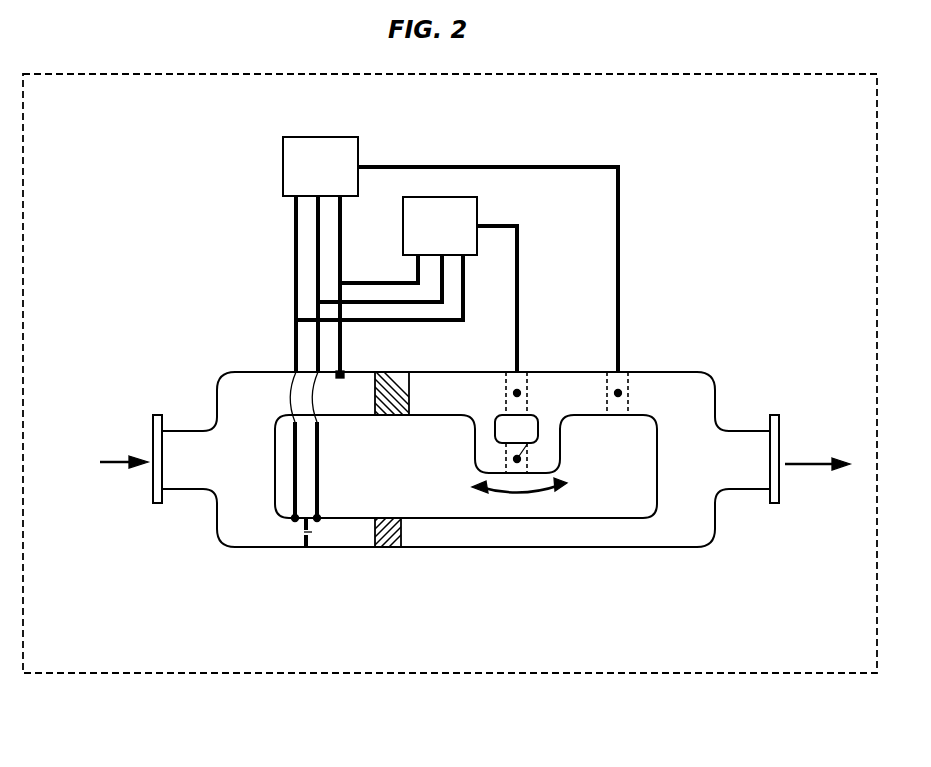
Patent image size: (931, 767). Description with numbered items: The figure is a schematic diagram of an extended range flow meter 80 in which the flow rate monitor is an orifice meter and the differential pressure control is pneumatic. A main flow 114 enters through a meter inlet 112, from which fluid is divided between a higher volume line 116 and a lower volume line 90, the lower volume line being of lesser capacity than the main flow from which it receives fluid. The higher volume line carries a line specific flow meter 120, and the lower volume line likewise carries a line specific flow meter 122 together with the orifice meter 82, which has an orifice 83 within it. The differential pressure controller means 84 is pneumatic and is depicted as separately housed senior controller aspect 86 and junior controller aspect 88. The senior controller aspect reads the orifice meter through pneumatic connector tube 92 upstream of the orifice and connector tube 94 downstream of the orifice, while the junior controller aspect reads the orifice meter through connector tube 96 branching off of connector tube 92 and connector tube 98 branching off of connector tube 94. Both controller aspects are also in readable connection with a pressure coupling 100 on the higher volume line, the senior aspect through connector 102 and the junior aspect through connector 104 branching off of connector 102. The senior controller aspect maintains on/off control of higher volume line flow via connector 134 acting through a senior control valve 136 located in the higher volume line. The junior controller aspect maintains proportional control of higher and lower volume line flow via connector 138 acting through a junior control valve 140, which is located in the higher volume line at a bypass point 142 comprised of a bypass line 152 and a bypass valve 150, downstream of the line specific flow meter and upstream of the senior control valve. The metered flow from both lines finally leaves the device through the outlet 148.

The extended range flow meter 80 is at (542, 652).
The orifice meter 82 is at (306, 548).
The orifice 83 is at (312, 532).
The differential pressure controller means 84 is at (376, 174).
The senior controller aspect 86 is at (283, 166).
The junior controller aspect 88 is at (478, 212).
The lower volume line 90 is at (275, 528).
The connector tube 92 is at (295, 447).
The connector tube 94 is at (317, 472).
The connector tube 96 is at (383, 322).
The connector tube 98 is at (428, 305).
The pressure coupling 100 is at (340, 378).
The connector 102 is at (340, 353).
The connector 104 is at (343, 281).
The meter inlet 112 is at (157, 504).
The main flow 114 is at (106, 464).
The higher volume line 116 is at (243, 400).
The line specific flow meter 120 is at (410, 394).
The line specific flow meter 122 is at (392, 548).
The connector 134 is at (535, 166).
The senior control valve 136 is at (618, 393).
The connector 138 is at (517, 261).
The junior control valve 140 is at (517, 393).
The bypass point 142 is at (520, 497).
The outlet 148 is at (773, 504).
The bypass valve 150 is at (505, 478).
The bypass line 152 is at (483, 448).